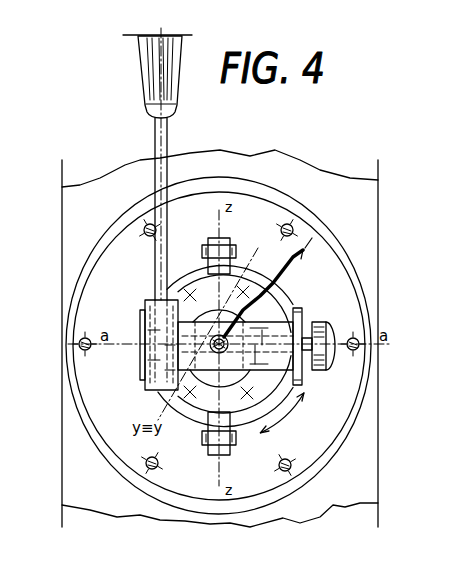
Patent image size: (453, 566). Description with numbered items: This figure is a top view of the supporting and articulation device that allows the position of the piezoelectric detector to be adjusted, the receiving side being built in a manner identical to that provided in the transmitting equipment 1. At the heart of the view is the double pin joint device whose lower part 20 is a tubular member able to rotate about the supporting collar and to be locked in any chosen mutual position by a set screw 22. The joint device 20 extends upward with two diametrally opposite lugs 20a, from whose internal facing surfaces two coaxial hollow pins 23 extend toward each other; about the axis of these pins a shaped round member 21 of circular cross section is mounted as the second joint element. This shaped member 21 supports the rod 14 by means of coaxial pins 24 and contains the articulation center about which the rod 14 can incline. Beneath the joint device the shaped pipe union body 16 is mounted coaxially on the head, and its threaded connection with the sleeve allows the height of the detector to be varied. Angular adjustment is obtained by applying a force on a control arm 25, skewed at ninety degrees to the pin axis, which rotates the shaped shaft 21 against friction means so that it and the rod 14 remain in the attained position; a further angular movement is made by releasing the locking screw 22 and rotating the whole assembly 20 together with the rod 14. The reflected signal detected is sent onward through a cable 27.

The transmitting equipment 1 is at (314, 156).
The support rod 14 is at (219, 347).
The pipe union body 16 is at (122, 447).
The lower joint device part 20 is at (190, 272).
The lugs 20a is at (141, 358).
The shaped round member 21 is at (255, 354).
The set screw 22 is at (320, 326).
The coaxial hollow pins 23 is at (145, 318).
The coaxial pins 24 is at (238, 286).
The control arm 25 is at (155, 141).
The cable 27 is at (301, 262).